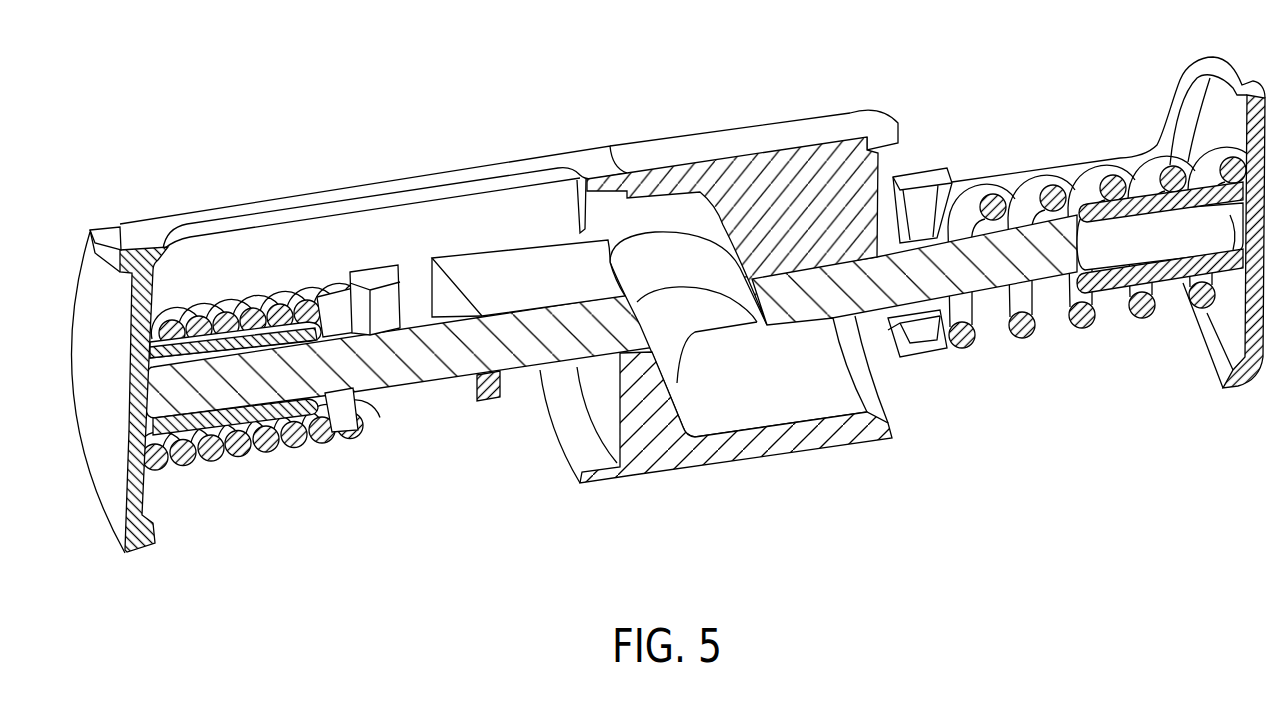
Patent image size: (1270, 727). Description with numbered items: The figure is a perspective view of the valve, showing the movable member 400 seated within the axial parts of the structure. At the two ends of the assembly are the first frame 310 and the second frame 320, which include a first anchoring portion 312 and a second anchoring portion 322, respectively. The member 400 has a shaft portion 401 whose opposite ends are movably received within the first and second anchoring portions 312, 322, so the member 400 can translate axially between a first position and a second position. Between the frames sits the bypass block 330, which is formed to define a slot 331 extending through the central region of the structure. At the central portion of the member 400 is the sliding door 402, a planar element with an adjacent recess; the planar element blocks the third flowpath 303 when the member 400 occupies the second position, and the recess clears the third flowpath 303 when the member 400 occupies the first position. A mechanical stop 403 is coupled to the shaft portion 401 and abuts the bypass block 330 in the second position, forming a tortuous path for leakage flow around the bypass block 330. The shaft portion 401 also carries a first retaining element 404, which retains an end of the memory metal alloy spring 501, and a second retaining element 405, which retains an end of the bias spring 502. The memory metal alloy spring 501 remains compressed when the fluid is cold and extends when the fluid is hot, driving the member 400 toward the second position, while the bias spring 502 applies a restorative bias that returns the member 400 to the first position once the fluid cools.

The third flowpath 303 is at (691, 322).
The first frame 310 is at (100, 237).
The first anchoring portion 312 is at (237, 353).
The second frame 320 is at (1207, 112).
The second anchoring portion 322 is at (1102, 220).
The bypass block 330 is at (682, 148).
The slot 331 is at (814, 260).
The member 400 is at (440, 388).
The shaft portion 401 is at (268, 380).
The sliding door 402 is at (475, 263).
The mechanical stop 403 is at (488, 392).
The first retaining element 404 is at (377, 267).
The second retaining element 405 is at (927, 180).
The memory metal alloy spring 501 is at (350, 433).
The bias spring 502 is at (1023, 323).